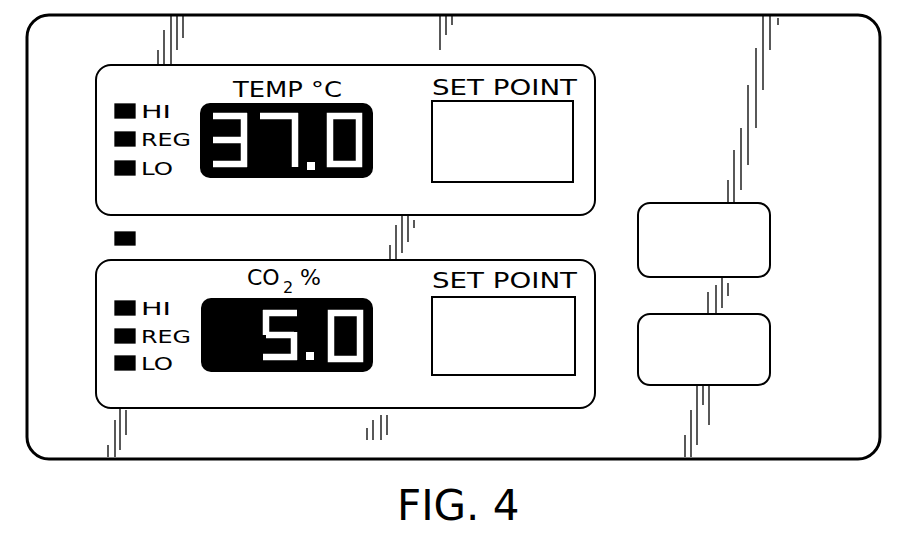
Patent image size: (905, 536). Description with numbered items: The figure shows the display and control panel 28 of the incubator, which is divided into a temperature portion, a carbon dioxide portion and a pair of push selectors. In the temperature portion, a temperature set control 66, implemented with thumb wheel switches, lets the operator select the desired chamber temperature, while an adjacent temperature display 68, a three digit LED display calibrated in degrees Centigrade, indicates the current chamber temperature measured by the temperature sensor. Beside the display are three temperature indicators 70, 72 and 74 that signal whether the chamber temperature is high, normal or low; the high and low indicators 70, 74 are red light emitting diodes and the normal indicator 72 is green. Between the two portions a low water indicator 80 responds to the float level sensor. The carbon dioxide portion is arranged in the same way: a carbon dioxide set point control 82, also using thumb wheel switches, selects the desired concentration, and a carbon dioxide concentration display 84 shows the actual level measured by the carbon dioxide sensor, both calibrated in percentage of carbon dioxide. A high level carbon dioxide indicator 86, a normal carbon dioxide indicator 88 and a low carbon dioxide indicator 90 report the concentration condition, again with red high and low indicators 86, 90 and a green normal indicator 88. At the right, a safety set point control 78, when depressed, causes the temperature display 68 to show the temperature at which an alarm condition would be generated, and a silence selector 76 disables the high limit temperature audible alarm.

The control panel 28 is at (229, 503).
The temperature set control 66 is at (563, 145).
The temperature display 68 is at (365, 103).
The high temperature indicator 70 is at (126, 103).
The normal temperature indicator 72 is at (115, 140).
The low temperature indicator 74 is at (115, 170).
The silence selector 76 is at (772, 362).
The safety set point control 78 is at (772, 228).
The low water indicator 80 is at (115, 238).
The carbon dioxide set point control 82 is at (562, 347).
The carbon dioxide concentration display 84 is at (328, 372).
The high level carbon dioxide indicator 86 is at (115, 305).
The normal carbon dioxide indicator 88 is at (115, 335).
The low carbon dioxide indicator 90 is at (115, 368).